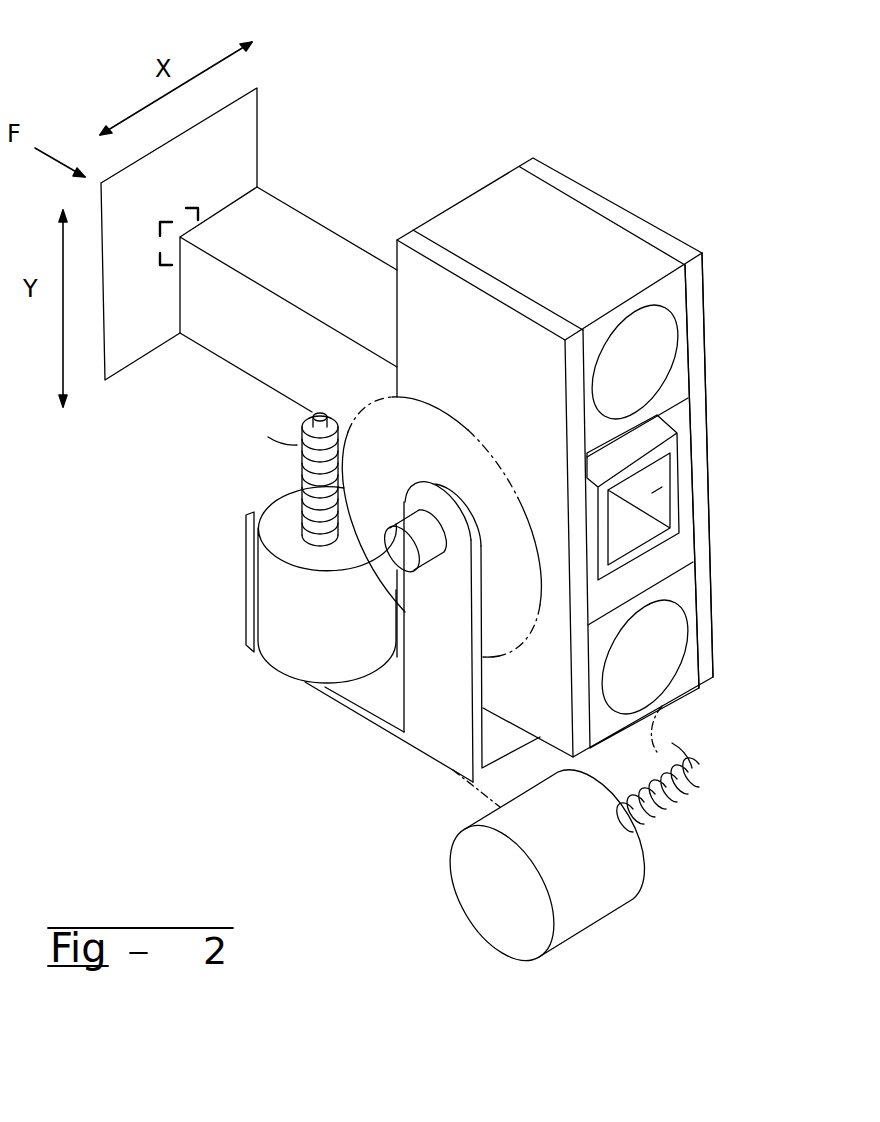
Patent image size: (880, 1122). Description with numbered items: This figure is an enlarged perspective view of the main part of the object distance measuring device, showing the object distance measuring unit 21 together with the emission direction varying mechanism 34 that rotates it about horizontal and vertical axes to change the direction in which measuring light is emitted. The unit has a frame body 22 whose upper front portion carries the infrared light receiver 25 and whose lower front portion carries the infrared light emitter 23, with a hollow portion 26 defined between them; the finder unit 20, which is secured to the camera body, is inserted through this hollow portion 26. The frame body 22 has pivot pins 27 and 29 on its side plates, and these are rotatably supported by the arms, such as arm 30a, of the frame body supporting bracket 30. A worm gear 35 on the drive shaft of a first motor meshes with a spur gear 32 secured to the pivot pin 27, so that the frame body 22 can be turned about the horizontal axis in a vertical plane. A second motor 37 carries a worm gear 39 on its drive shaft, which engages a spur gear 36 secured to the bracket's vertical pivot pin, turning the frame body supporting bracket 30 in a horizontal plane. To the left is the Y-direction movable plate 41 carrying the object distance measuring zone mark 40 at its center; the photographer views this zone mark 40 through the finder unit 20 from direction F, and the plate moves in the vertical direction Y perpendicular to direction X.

The finder unit 20 is at (673, 482).
The object distance measuring unit 21 is at (708, 300).
The frame body 22 is at (617, 237).
The infrared light emitter 23 is at (667, 655).
The infrared light receiver 25 is at (658, 358).
The hollow portion 26 is at (675, 553).
The pivot pin 27 is at (418, 559).
The pivot pin 29 is at (707, 350).
The frame body supporting bracket 30 is at (405, 725).
The arm 30a is at (440, 735).
The spur gear 32 is at (460, 430).
The emission direction varying mechanism 34 is at (320, 722).
The worm gear 35 is at (265, 612).
The spur gear 36 is at (655, 748).
The second motor 37 is at (610, 907).
The worm gear 39 is at (693, 803).
The object distance measuring zone mark 40 is at (260, 186).
The Y-direction movable plate 41 is at (257, 117).